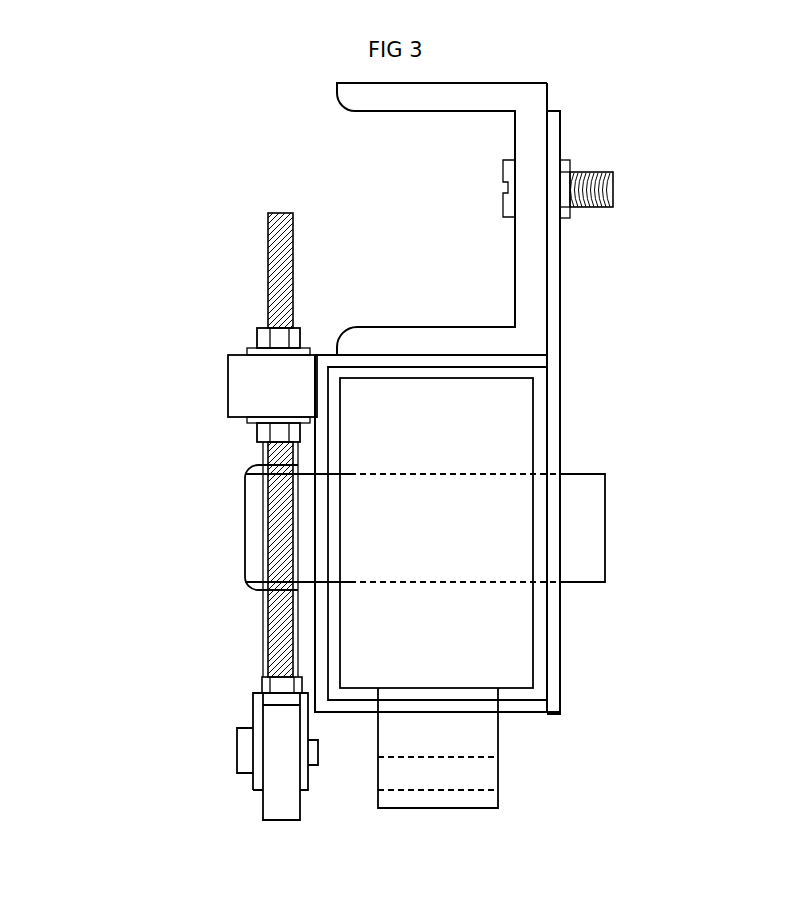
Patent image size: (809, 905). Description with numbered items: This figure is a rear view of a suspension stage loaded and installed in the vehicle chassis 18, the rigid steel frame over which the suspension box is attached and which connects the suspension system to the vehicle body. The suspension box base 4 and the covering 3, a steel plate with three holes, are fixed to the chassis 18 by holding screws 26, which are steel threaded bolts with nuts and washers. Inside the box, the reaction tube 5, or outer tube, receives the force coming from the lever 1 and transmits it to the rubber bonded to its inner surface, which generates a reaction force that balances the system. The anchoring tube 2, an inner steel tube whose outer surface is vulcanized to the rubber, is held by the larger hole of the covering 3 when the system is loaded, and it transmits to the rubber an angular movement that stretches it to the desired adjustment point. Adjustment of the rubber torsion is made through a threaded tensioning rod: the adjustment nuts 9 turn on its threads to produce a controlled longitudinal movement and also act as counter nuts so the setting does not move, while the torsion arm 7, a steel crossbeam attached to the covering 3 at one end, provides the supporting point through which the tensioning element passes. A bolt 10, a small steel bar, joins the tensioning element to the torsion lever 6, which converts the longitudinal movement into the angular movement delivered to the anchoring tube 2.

The lever 1 is at (394, 799).
The anchoring tube 2 is at (243, 512).
The covering 3 is at (562, 719).
The suspension box base 4 is at (563, 315).
The reaction tube 5 is at (349, 628).
The torsion lever 6 is at (261, 660).
The torsion arm 7 is at (226, 388).
The adjustment nuts 9 is at (256, 335).
The bolt 10 is at (236, 750).
The vehicle chassis 18 is at (549, 87).
The holding screws 26 is at (616, 187).